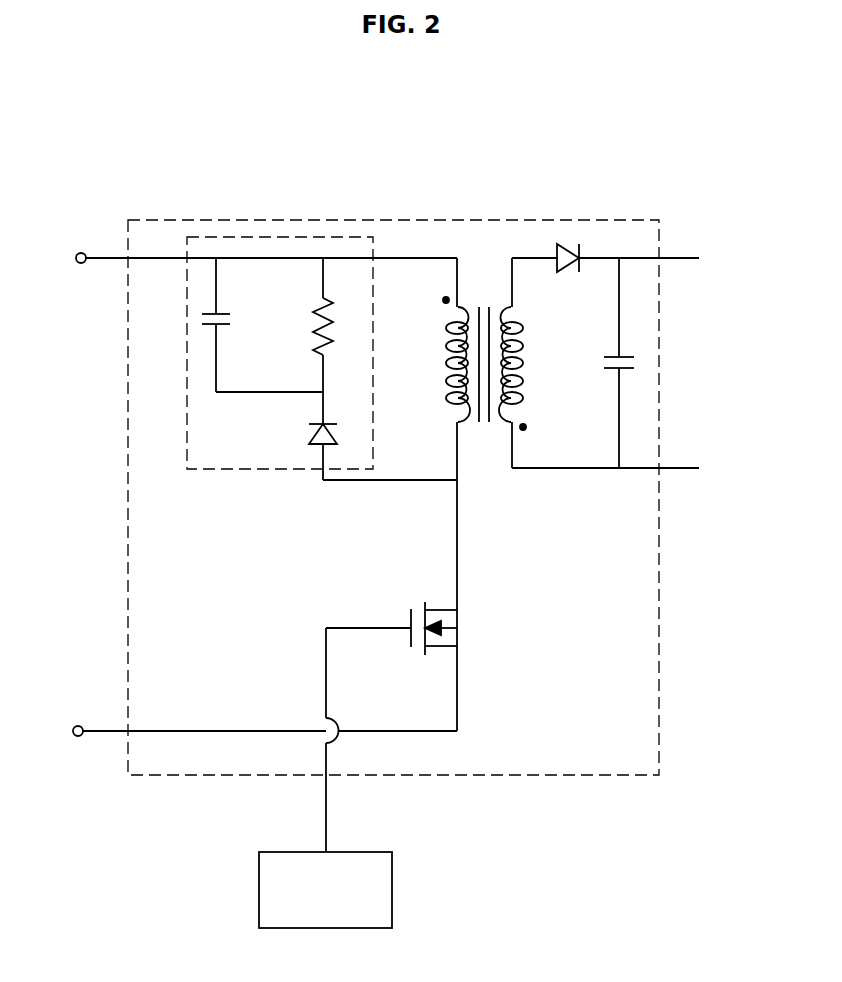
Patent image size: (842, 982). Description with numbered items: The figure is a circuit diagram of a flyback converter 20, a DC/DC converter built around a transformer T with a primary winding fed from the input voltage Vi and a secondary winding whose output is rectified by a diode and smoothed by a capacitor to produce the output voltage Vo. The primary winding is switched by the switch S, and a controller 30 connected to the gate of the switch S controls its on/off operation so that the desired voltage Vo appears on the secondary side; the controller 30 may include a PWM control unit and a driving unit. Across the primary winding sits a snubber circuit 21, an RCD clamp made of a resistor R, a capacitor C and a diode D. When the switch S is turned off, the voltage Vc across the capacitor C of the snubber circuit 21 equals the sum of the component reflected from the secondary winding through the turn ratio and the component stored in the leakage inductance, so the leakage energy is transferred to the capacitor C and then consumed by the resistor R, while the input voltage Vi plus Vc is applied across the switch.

The flyback converter 20 is at (144, 168).
The snubber circuit 21 is at (274, 237).
The controller 30 is at (392, 889).